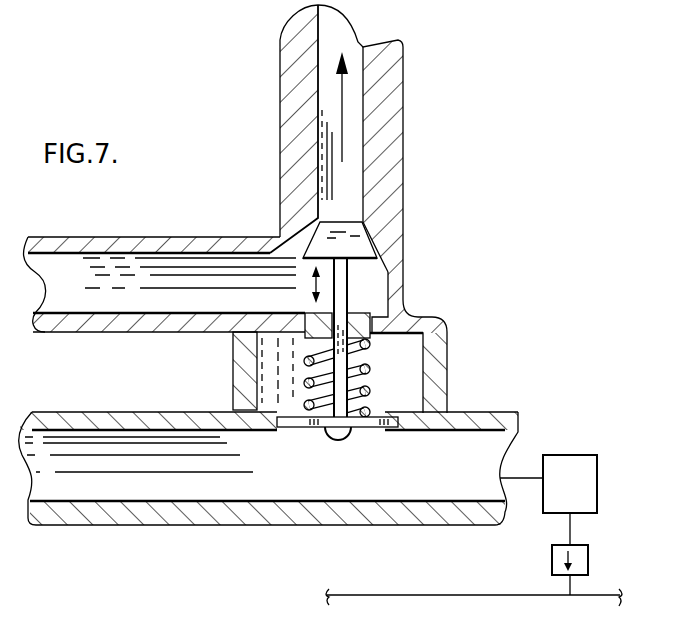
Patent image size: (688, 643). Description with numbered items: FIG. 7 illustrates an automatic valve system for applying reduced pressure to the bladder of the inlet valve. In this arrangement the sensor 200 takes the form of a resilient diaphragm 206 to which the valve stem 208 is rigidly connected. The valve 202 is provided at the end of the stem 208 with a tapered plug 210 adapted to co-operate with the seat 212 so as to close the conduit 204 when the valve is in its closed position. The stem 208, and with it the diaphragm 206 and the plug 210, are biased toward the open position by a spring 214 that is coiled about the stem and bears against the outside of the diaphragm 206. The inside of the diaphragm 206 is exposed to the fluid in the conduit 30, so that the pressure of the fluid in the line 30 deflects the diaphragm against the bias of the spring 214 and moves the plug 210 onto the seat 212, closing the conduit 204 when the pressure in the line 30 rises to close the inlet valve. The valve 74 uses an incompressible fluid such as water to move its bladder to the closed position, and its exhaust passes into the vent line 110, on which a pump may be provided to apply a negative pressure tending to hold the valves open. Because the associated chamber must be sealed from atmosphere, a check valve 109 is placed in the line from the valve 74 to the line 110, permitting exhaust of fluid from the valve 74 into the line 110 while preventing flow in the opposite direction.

The conduit 30 is at (165, 524).
The valve 74 is at (583, 494).
The check valve 109 is at (550, 566).
The line 110 is at (453, 595).
The sensor 200 is at (466, 383).
The valve 202 is at (426, 288).
The conduit 204 is at (403, 162).
The resilient diaphragm 206 is at (372, 430).
The valve stem 208 is at (400, 307).
The tapered plug 210 is at (400, 250).
The seat 212 is at (397, 223).
The spring 214 is at (305, 362).